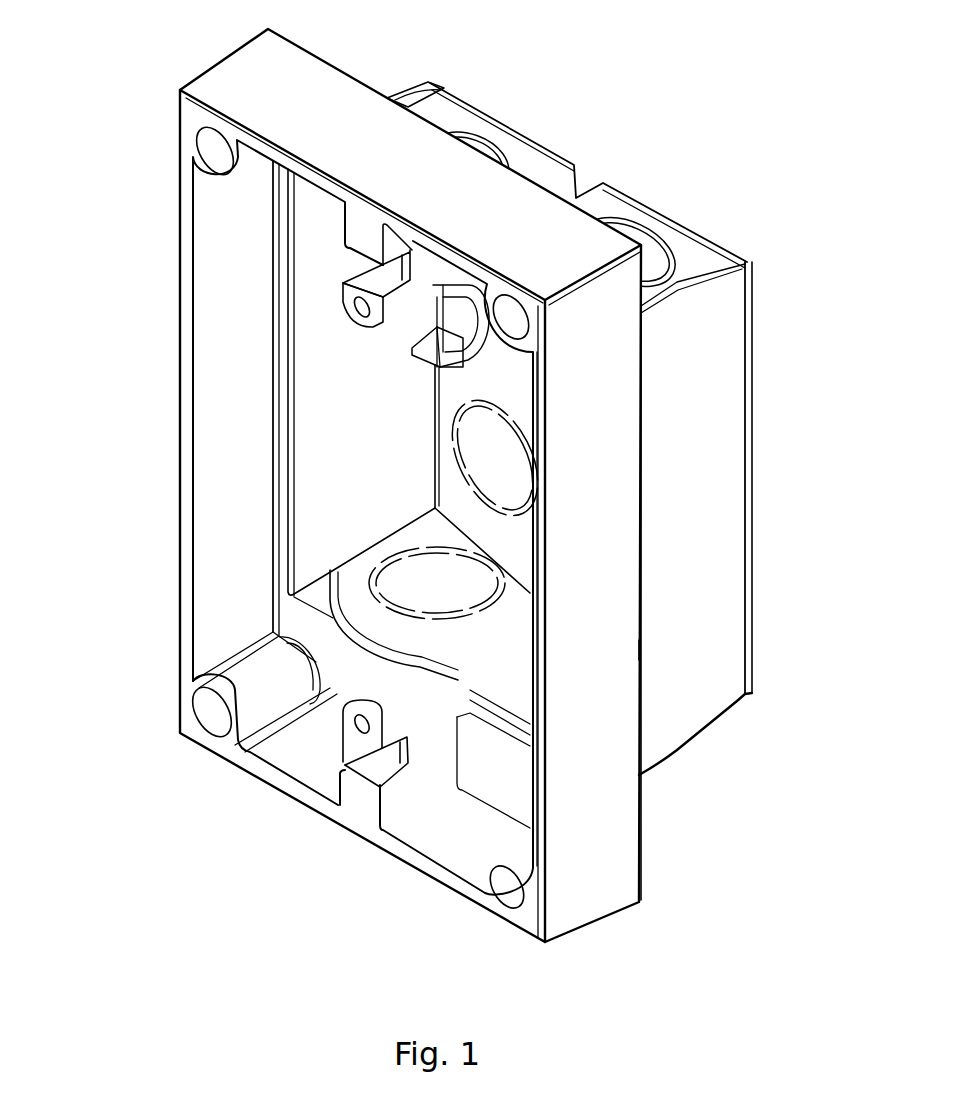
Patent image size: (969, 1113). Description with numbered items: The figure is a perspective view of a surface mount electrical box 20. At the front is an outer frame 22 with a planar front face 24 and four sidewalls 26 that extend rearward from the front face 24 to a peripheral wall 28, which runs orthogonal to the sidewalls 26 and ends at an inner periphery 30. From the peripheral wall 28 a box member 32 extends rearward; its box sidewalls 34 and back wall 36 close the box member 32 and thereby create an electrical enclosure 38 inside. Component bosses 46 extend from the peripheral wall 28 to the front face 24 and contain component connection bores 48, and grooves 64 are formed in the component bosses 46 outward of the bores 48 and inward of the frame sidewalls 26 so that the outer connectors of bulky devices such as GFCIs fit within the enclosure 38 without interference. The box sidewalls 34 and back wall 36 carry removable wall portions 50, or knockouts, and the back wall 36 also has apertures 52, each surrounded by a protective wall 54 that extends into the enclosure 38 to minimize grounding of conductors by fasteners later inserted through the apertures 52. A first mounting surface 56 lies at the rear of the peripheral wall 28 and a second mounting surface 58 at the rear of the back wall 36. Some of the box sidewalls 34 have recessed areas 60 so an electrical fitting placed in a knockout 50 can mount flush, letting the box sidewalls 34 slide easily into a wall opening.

The surface mount electrical box 20 is at (150, 118).
The outer frame 22 is at (590, 920).
The planar front face 24 is at (183, 500).
The sidewalls 26 is at (392, 173).
The peripheral wall 28 is at (510, 775).
The inner periphery 30 is at (292, 405).
The box member 32 is at (731, 249).
The box sidewalls 34 is at (517, 173).
The back wall 36 is at (492, 388).
The electrical enclosure 38 is at (322, 462).
The component bosses 46 is at (355, 325).
The component connection bores 48 is at (340, 737).
The removable wall portions 50 is at (475, 145).
The apertures 52 is at (437, 325).
The protective wall 54 is at (463, 368).
The first mounting surface 56 is at (641, 647).
The second mounting surface 58 is at (750, 620).
The recessed areas 60 is at (437, 100).
The grooves 64 is at (373, 265).